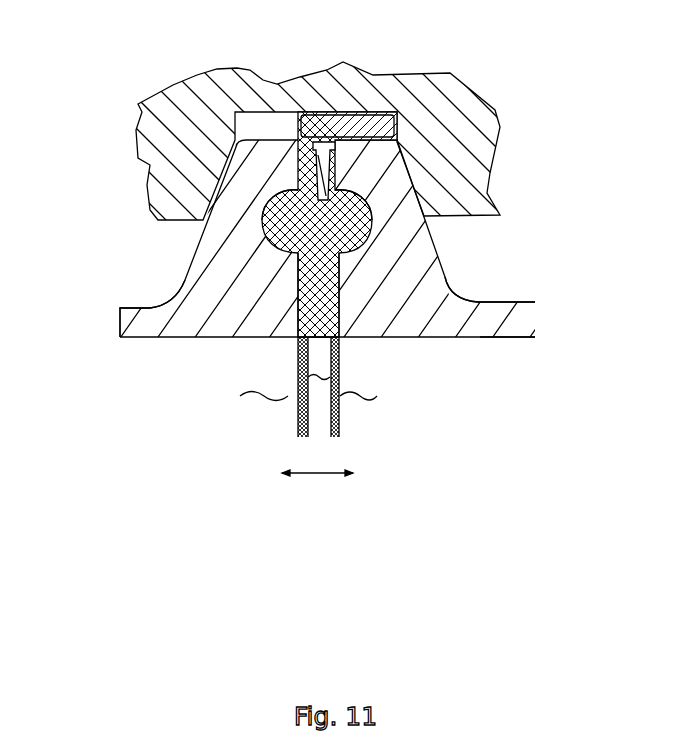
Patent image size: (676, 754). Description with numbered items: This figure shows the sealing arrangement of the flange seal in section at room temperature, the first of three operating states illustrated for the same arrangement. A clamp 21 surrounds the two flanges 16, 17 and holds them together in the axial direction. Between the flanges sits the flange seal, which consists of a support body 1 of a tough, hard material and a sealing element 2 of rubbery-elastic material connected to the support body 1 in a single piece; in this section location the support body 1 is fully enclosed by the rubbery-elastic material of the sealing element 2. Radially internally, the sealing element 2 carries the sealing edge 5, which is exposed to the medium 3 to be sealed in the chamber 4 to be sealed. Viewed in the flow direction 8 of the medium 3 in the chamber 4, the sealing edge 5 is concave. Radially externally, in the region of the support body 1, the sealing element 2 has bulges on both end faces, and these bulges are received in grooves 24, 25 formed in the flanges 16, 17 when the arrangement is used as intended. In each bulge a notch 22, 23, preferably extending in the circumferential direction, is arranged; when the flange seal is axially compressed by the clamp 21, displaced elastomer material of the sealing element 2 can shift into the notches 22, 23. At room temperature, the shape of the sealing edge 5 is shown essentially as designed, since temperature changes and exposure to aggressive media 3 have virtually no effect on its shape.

The support body 1 is at (362, 111).
The sealing element 2 is at (300, 308).
The medium 3 is at (380, 395).
The chamber 4 is at (294, 443).
The sealing edge 5 is at (320, 334).
The flow direction 8 is at (327, 475).
The flange 16 is at (127, 328).
The flange 17 is at (477, 321).
The clamp 21 is at (197, 107).
The notch 22 is at (267, 213).
The notch 23 is at (358, 200).
The groove 24 is at (267, 190).
The groove 25 is at (333, 172).